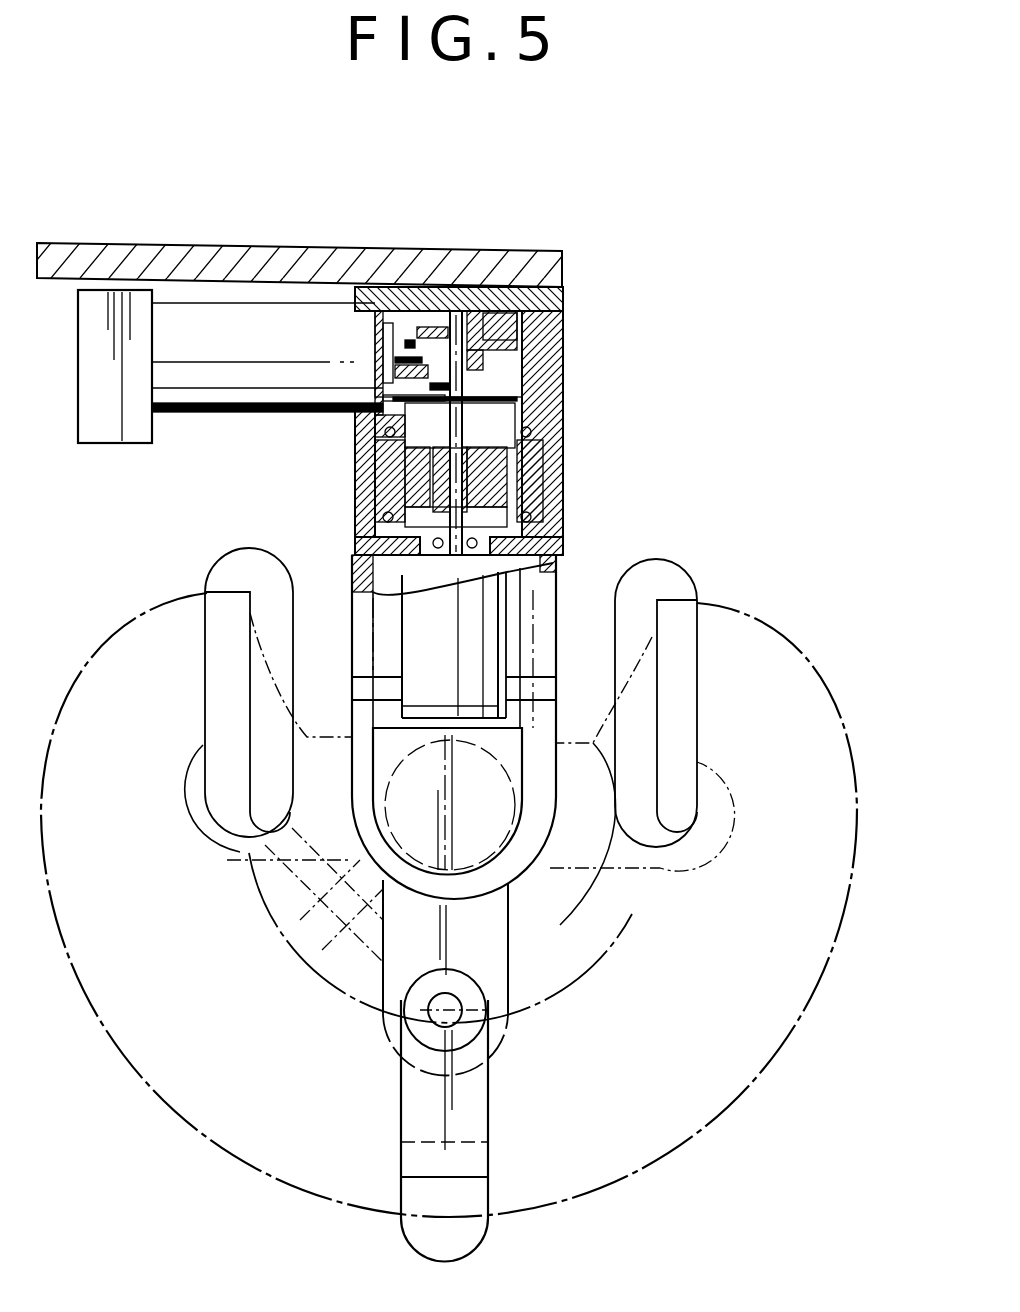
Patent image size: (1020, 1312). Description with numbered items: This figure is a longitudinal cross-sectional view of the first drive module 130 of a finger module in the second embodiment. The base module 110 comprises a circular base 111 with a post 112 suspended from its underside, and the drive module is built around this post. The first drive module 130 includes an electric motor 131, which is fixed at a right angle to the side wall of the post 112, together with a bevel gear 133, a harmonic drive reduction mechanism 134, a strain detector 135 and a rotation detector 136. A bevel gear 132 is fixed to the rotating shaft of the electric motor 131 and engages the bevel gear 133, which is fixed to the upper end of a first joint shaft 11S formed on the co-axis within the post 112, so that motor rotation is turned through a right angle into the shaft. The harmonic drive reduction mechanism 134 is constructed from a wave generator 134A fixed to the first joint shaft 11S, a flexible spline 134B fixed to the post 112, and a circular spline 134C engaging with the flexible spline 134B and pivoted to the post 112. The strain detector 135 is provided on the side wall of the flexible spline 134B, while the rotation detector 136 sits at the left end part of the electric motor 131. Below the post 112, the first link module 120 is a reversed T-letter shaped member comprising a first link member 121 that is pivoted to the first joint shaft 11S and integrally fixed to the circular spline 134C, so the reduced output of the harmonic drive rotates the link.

The base module 110 is at (610, 215).
The circular base 111 is at (246, 258).
The post 112 is at (545, 364).
The first joint shaft 11S is at (562, 342).
The first link module 120 is at (570, 564).
The first link member 121 is at (562, 546).
The first drive module 130 is at (216, 468).
The electric motor 131 is at (217, 403).
The bevel gear 132 is at (383, 326).
The bevel gear 133 is at (492, 312).
The harmonic drive reduction mechanism 134 is at (578, 484).
The wave generator 134A is at (530, 465).
The flexible spline 134B is at (357, 424).
The circular spline 134C is at (371, 487).
The strain detector 135 is at (548, 405).
The rotation detector 136 is at (113, 445).